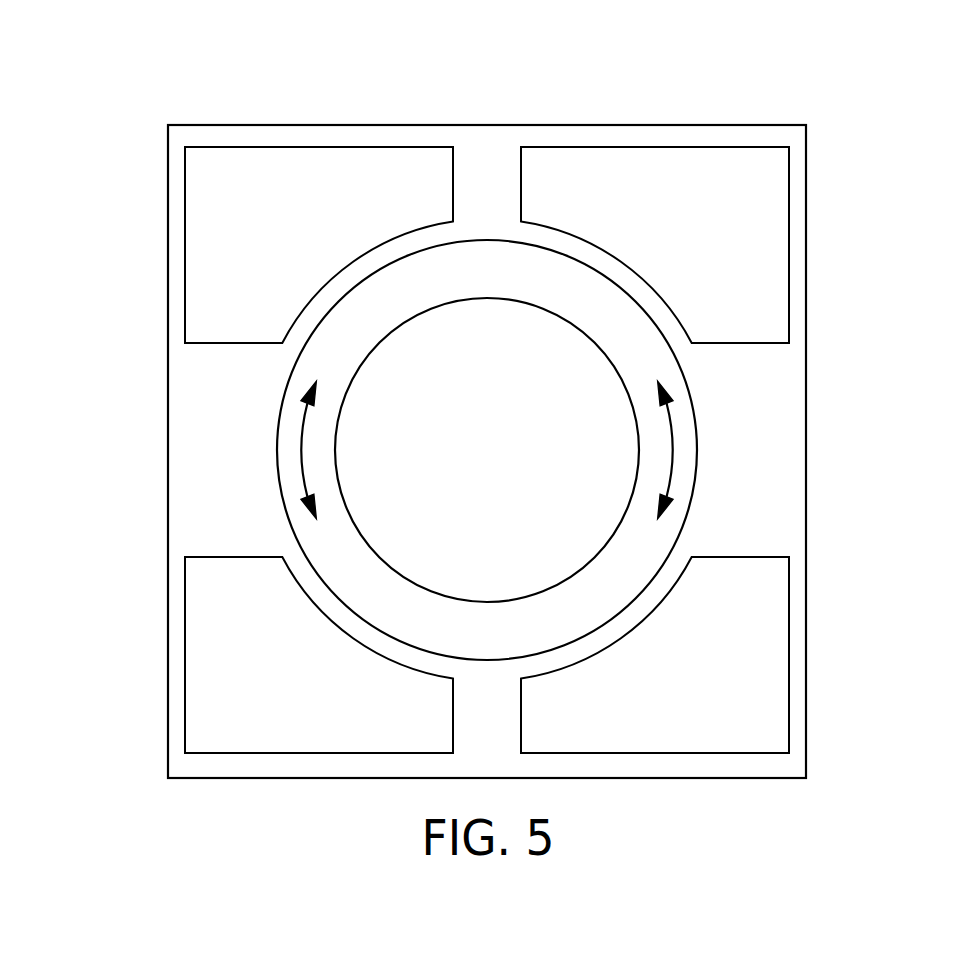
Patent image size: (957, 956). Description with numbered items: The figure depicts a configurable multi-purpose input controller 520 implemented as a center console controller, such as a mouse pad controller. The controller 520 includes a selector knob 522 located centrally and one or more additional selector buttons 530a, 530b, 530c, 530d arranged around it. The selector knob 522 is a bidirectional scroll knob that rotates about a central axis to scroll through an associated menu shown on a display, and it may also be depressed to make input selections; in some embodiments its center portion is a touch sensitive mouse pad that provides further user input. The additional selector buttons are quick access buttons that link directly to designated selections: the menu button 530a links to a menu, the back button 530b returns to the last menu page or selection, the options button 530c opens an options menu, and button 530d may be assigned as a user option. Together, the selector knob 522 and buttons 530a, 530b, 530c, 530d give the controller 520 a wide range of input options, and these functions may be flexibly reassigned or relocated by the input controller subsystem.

The controller 520 is at (310, 125).
The selector knob 522 is at (280, 441).
The menu button 530a is at (185, 247).
The back button 530b is at (185, 657).
The options button 530c is at (789, 655).
The button 530d is at (789, 245).